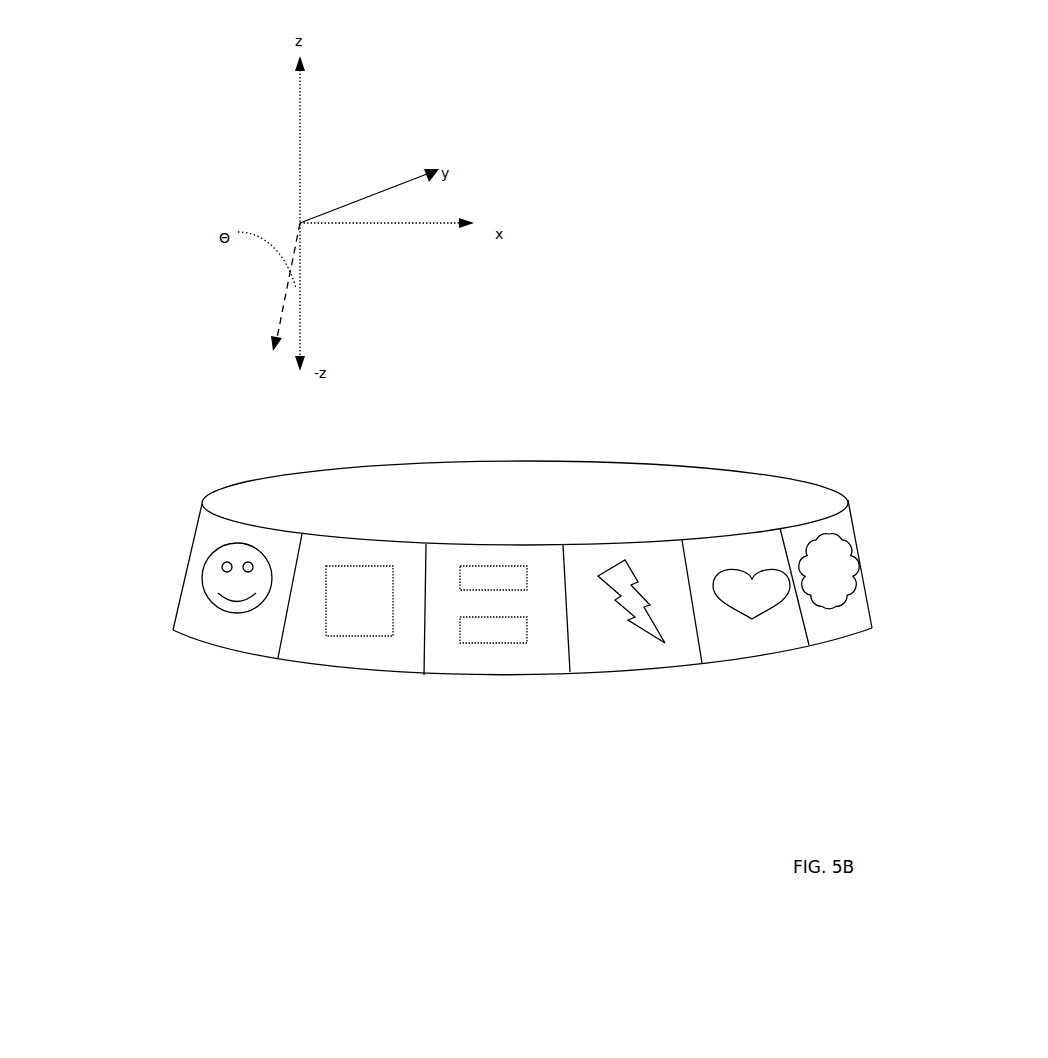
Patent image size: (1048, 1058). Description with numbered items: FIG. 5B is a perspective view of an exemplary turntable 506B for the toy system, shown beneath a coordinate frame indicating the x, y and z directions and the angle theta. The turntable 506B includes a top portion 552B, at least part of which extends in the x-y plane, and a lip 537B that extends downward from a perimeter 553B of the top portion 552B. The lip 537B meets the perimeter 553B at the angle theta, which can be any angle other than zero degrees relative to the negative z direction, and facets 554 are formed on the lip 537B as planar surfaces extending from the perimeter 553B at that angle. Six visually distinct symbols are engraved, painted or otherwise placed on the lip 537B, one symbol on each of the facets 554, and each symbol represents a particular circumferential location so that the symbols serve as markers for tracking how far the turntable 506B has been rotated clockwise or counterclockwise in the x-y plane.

The turntable 506B is at (203, 450).
The lip 537B is at (193, 545).
The top portion 552B is at (510, 488).
The perimeter 553B is at (795, 482).
The facets 554 is at (197, 615).